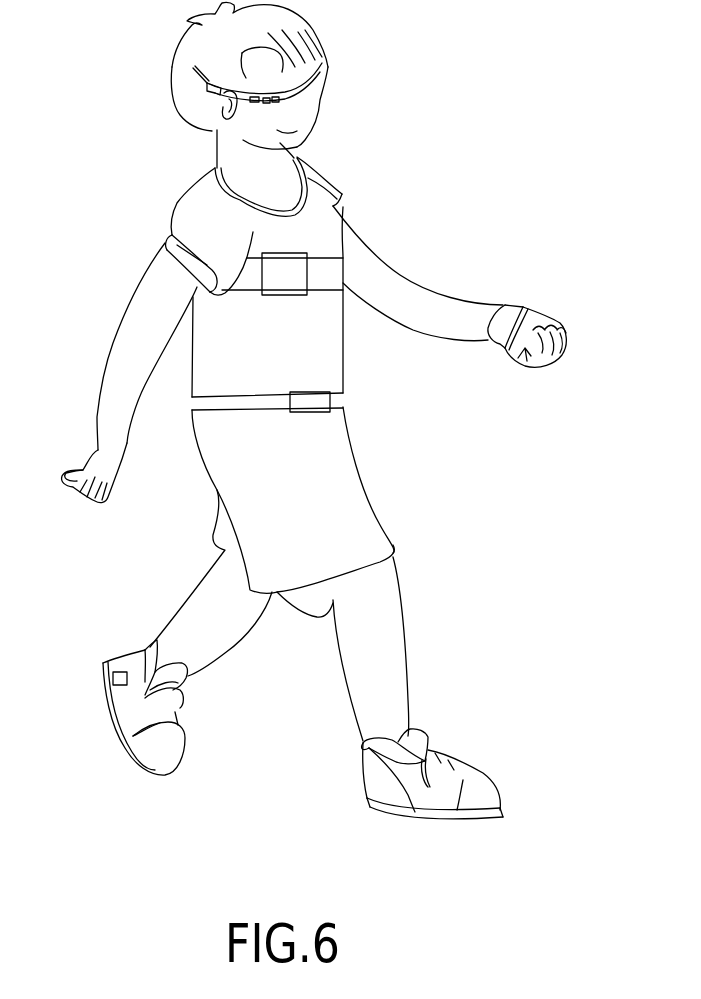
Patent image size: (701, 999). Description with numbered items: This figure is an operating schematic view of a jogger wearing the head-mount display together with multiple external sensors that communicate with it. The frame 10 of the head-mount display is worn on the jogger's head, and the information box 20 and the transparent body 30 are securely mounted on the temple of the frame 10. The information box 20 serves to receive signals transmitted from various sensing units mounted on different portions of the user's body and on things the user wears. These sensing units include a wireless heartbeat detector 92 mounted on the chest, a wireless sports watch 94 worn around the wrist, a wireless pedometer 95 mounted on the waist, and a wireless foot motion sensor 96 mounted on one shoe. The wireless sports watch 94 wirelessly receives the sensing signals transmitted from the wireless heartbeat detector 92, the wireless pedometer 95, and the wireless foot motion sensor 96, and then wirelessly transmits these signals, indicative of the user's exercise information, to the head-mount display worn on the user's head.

The frame 10 is at (265, 91).
The information box 20 is at (208, 92).
The transparent body 30 is at (280, 101).
The wireless heartbeat detector 92 is at (277, 273).
The wireless sports watch 94 is at (510, 307).
The wireless pedometer 95 is at (310, 403).
The wireless foot motion sensor 96 is at (118, 678).